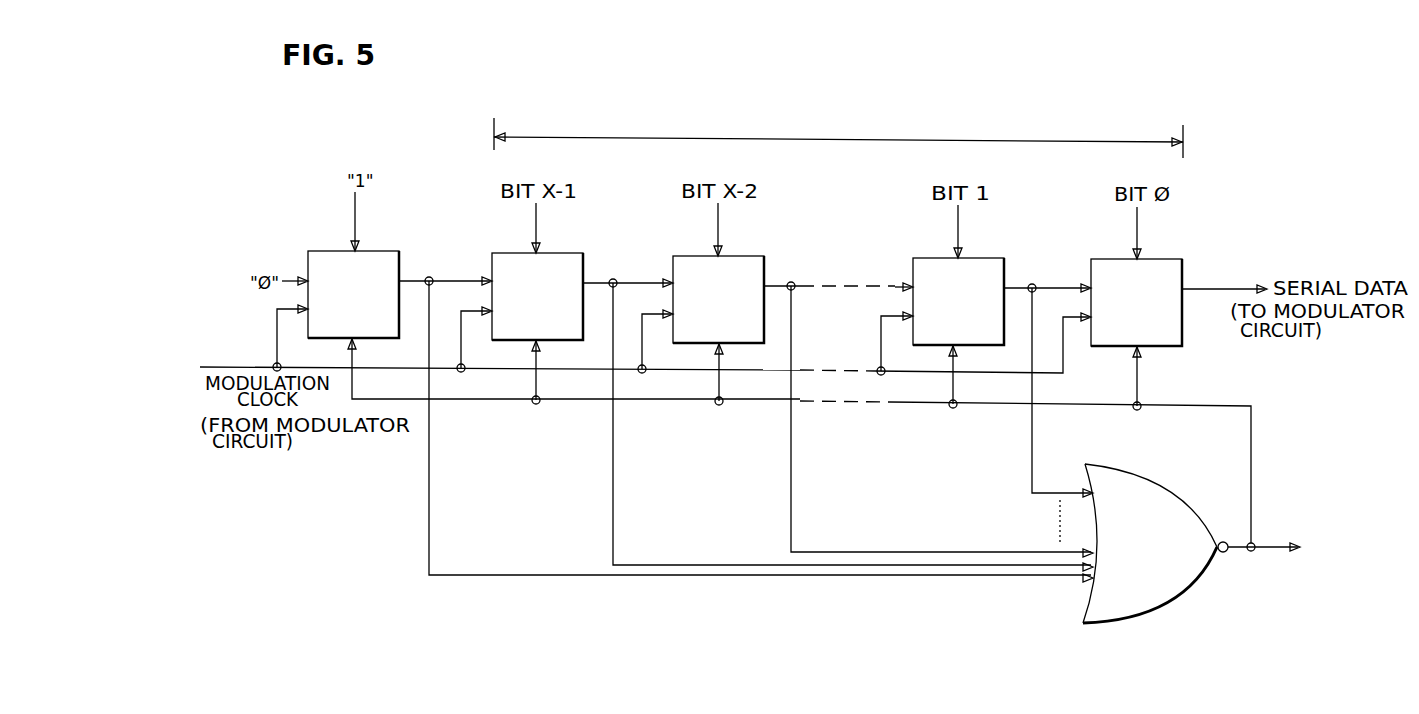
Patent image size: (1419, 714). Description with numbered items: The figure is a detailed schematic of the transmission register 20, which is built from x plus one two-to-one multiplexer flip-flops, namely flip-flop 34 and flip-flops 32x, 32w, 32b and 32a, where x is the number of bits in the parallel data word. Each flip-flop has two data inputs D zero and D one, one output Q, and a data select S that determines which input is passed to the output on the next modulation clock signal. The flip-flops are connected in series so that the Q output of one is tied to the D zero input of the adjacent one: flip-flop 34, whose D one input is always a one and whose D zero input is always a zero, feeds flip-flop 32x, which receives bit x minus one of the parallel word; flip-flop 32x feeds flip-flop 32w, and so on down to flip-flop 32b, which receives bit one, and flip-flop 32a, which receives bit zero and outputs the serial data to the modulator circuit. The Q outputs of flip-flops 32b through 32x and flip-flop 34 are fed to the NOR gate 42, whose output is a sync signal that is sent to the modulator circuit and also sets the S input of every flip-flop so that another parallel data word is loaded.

The transmission register 20 is at (1036, 94).
The flip-flop 34 is at (401, 236).
The flip-flop 32x is at (552, 262).
The flip-flop 32w is at (732, 265).
The flip-flop 32b is at (982, 267).
The flip-flop 32a is at (1150, 268).
The NOR gate 42 is at (1140, 488).